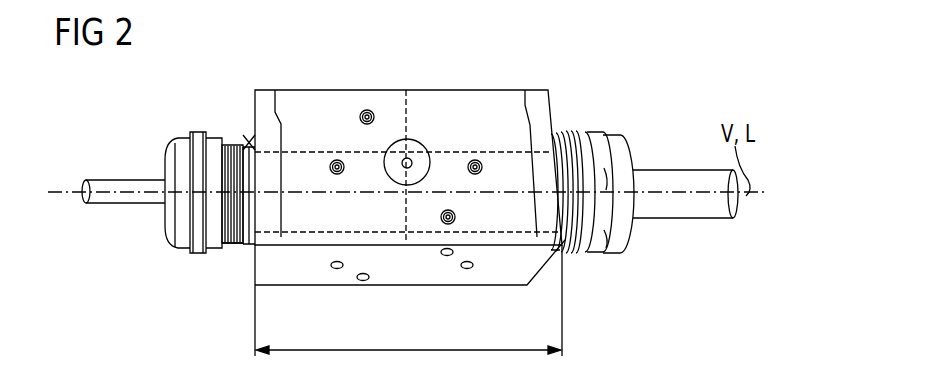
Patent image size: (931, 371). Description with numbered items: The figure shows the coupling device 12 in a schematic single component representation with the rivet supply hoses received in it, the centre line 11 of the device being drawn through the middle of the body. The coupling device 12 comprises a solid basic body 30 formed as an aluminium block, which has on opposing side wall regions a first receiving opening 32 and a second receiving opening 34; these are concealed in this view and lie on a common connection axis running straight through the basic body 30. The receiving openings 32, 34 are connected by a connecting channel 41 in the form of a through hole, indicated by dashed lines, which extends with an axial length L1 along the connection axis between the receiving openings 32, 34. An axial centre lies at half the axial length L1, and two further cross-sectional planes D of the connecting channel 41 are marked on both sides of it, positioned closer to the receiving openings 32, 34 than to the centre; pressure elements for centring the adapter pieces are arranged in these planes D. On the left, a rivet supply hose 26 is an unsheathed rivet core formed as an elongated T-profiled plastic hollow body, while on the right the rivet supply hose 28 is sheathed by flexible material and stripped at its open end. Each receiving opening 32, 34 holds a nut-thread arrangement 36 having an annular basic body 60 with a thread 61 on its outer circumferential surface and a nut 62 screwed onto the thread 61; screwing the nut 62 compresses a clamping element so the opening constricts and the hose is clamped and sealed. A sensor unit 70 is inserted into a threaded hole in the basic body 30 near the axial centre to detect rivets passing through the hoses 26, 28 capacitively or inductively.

The center line of sensor body 11 is at (402, 107).
The coupling device 12 is at (353, 292).
The rivet supply hose 26 is at (120, 180).
The rivet supply hose 28 is at (667, 176).
The basic body 30 is at (479, 95).
The first receiving opening 32 is at (242, 143).
The second receiving opening 34 is at (562, 136).
The nut-thread arrangement 36 is at (222, 256).
The connecting channel 41 is at (328, 153).
The annular basic body 60 is at (222, 200).
The thread 61 is at (238, 143).
The nut 62 is at (183, 252).
The sensor unit 70 is at (418, 147).
The cross-sectional planes D is at (280, 90).
The axial length L1 is at (408, 337).